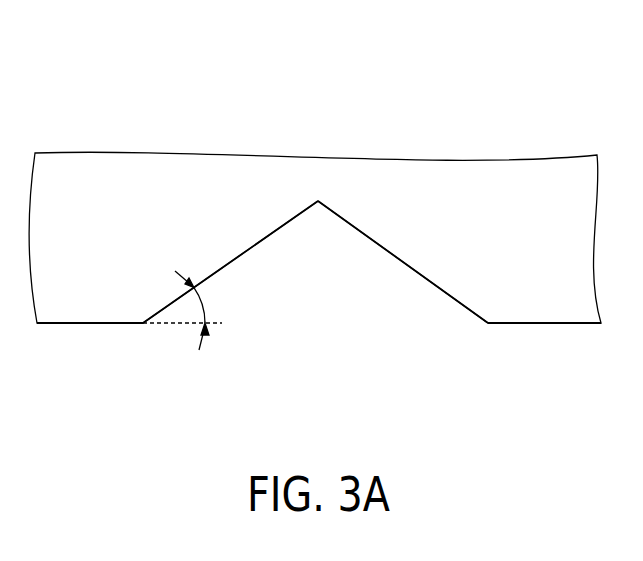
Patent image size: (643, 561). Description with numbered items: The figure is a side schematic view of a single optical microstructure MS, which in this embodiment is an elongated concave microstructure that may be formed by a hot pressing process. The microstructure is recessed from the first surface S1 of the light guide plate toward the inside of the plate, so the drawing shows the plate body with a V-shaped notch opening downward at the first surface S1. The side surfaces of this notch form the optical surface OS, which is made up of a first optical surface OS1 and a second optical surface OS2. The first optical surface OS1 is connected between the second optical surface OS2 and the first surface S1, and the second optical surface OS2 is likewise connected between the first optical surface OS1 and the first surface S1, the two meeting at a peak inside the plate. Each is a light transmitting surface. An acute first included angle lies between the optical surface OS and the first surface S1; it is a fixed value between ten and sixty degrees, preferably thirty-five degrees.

The optical microstructure MS is at (392, 389).
The first optical surface OS1 is at (378, 244).
The second optical surface OS2 is at (255, 246).
The first surface S1 is at (546, 323).
The optical surface OS is at (168, 38).